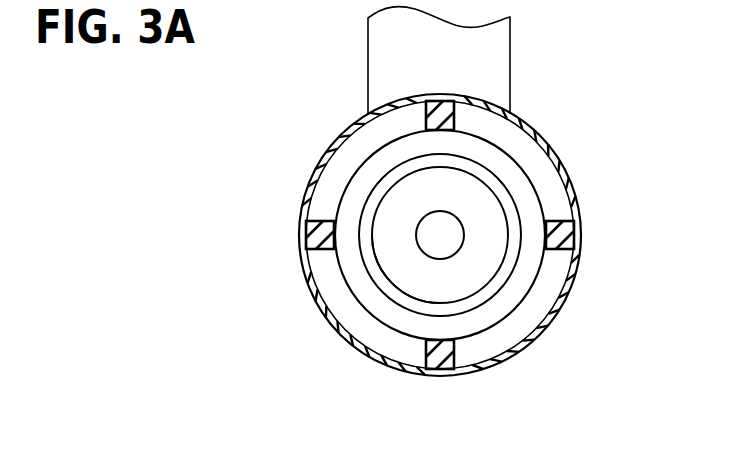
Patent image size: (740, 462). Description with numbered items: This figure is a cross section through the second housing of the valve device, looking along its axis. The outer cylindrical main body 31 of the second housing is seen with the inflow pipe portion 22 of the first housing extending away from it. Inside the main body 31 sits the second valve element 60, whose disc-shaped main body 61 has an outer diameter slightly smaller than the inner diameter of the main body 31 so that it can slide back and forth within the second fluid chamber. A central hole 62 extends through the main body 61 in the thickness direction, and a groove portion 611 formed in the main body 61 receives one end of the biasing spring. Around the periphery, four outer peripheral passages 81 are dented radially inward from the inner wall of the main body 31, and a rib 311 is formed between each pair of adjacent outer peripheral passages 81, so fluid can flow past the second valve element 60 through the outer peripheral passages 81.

The inflow pipe portion 22 is at (503, 48).
The main body 31 is at (530, 131).
The rib 311 is at (428, 117).
The outer peripheral passage 81 is at (333, 153).
The second valve element 60 is at (540, 190).
The main body 61 is at (528, 211).
The groove portion 611 is at (378, 280).
The hole 62 is at (445, 244).